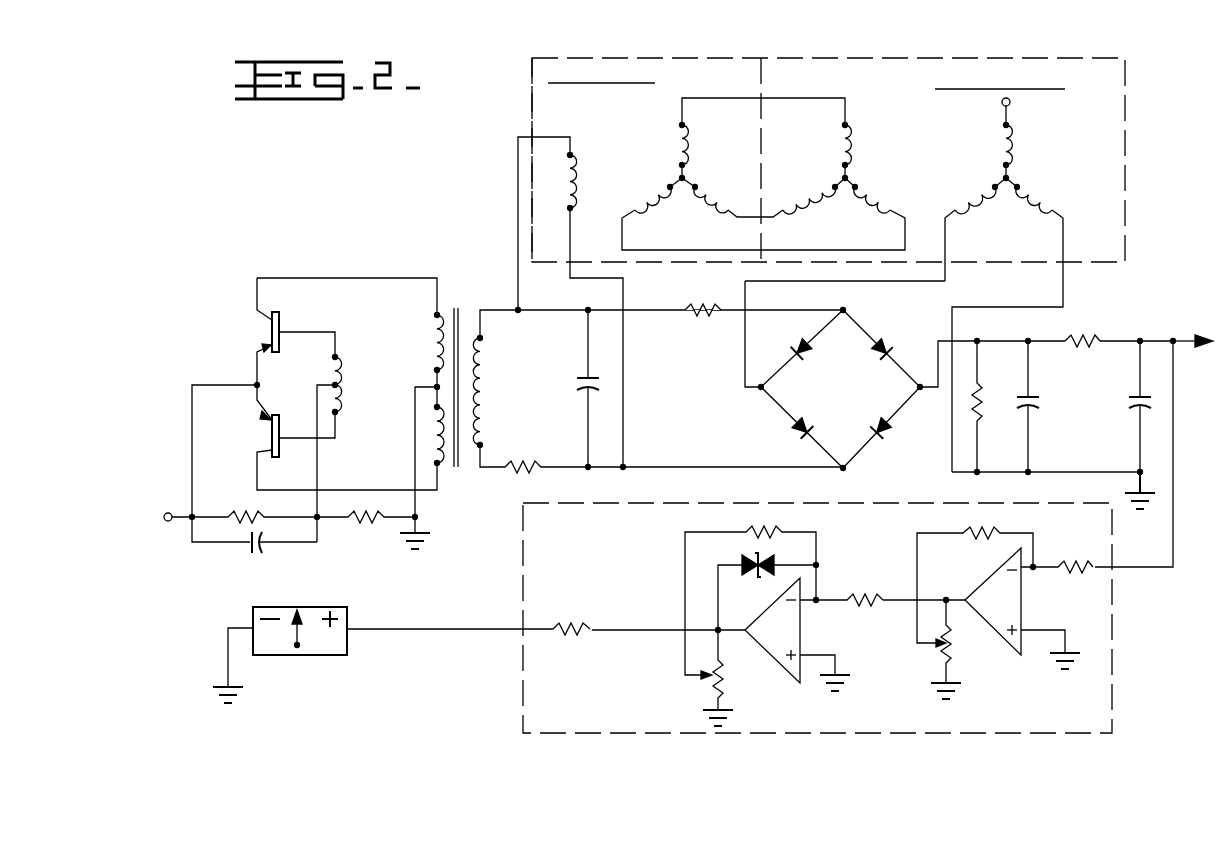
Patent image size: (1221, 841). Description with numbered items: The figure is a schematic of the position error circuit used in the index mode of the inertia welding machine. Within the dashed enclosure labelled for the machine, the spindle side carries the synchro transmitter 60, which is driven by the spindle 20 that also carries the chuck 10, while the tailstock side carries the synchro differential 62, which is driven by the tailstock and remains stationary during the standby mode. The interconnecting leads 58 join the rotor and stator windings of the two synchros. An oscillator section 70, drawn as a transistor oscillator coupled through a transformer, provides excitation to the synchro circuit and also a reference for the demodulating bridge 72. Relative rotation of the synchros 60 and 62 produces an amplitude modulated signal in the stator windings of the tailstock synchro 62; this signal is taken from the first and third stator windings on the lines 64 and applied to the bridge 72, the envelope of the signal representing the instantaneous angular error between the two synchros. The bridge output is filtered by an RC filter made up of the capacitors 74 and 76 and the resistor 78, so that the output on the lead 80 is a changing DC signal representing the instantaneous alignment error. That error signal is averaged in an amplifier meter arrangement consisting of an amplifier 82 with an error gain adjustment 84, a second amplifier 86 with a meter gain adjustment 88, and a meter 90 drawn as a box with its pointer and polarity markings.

The chuck 10 is at (1010, 50).
The spindle 20 is at (520, 118).
The connecting leads 58 is at (778, 99).
The synchro transmitter 60 is at (630, 161).
The synchro differential 62 is at (935, 175).
The lines 64 is at (947, 280).
The oscillator section 70 is at (392, 262).
The demodulating bridge 72 is at (855, 396).
The capacitor 74 is at (1035, 398).
The capacitor 76 is at (1134, 408).
The resistor 78 is at (1070, 338).
The lead 80 is at (1180, 338).
The amplifier 82 is at (1021, 603).
The error gain adjustment 84 is at (950, 642).
The amplifier 86 is at (797, 632).
The meter gain adjustment 88 is at (722, 670).
The meter 90 is at (322, 648).